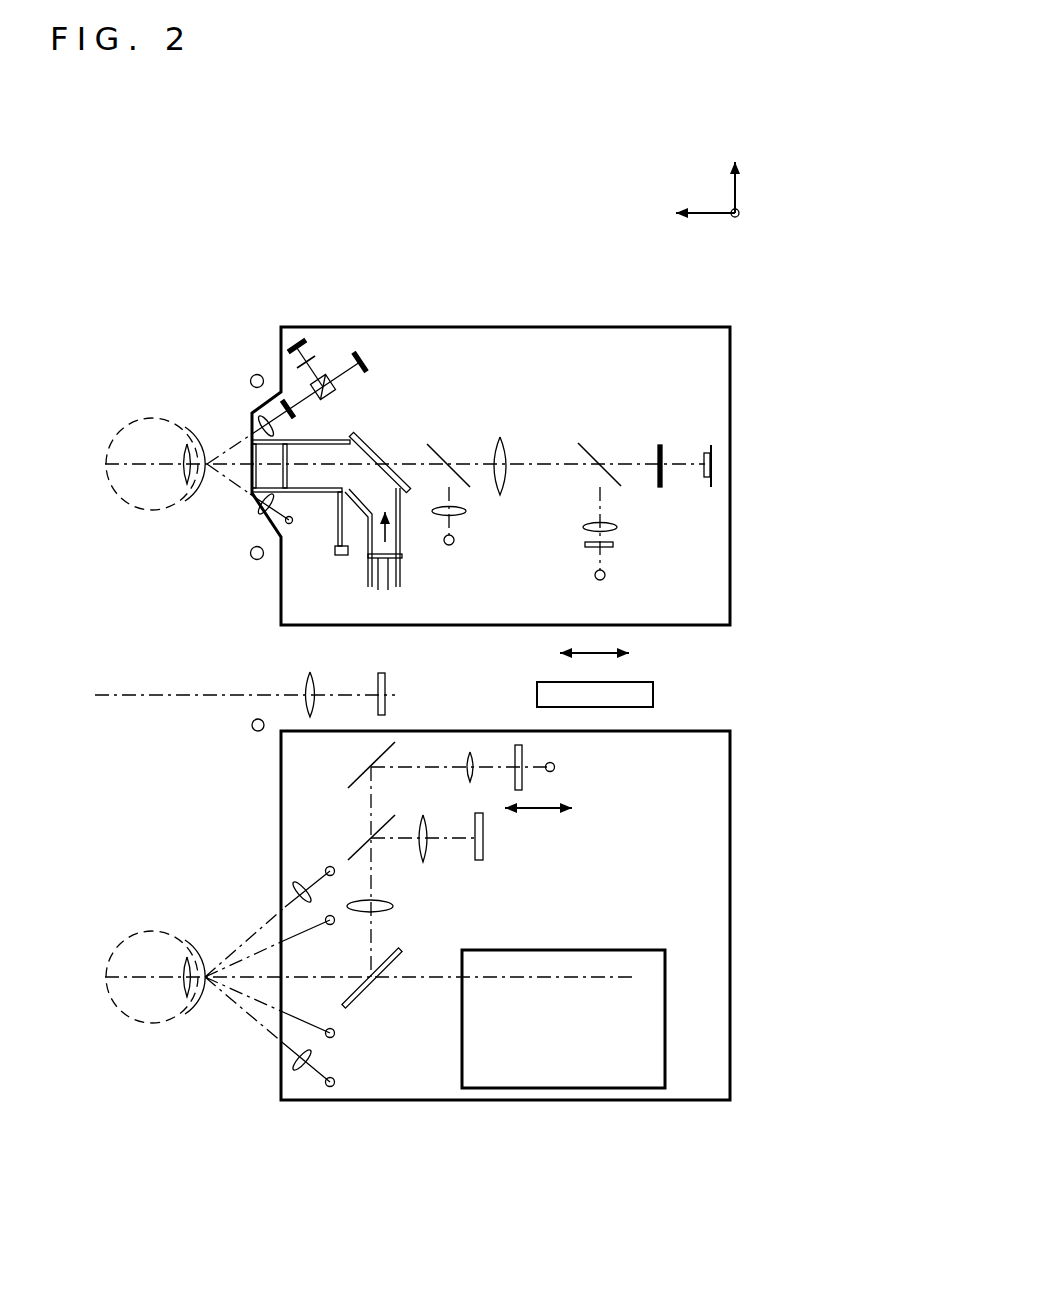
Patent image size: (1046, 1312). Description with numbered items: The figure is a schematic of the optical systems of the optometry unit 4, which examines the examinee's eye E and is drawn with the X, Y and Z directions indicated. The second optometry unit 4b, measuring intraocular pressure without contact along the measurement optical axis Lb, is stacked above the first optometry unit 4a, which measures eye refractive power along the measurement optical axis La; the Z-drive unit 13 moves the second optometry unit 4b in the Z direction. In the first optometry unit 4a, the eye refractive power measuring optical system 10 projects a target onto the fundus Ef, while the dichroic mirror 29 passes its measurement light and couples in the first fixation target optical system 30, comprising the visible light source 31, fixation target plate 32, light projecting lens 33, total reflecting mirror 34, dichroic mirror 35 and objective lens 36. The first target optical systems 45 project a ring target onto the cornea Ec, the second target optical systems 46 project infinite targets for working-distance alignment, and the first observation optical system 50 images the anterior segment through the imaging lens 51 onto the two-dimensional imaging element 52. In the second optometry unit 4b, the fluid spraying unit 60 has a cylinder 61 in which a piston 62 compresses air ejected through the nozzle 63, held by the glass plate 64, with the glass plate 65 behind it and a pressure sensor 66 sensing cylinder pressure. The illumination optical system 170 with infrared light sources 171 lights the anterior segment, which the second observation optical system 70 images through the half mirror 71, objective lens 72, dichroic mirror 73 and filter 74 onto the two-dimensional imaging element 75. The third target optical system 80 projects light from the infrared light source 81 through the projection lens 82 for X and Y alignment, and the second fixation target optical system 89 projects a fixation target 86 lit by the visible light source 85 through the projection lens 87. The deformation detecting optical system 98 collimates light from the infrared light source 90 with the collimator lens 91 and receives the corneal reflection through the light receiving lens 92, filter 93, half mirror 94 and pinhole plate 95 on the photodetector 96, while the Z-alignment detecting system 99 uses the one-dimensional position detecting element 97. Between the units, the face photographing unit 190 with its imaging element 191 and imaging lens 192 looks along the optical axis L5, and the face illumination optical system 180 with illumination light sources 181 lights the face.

The optometry unit 4 is at (802, 522).
The first optometry unit 4a is at (500, 1100).
The second optometry unit 4b is at (625, 325).
The eye refractive power measuring optical system 10 is at (625, 950).
The Z-drive unit 13 is at (653, 694).
The dichroic mirror 29 is at (368, 998).
The first fixation target optical system 30 is at (608, 826).
The visible light source 31 is at (556, 770).
The fixation target plate 32 is at (521, 748).
The light projecting lens 33 is at (466, 775).
The total reflecting mirror 34 is at (358, 778).
The dichroic mirror 35 is at (357, 848).
The objective lens 36 is at (393, 905).
The first target optical systems 45 is at (292, 947).
The second target optical systems 46 is at (297, 868).
The first observation optical system 50 is at (488, 882).
The imaging lens 51 is at (428, 850).
The two-dimensional imaging element 52 is at (483, 848).
The fluid spraying unit 60 is at (280, 607).
The cylinder 61 is at (372, 562).
The piston 62 is at (398, 560).
The nozzle 63 is at (272, 474).
The glass plate 64 is at (278, 446).
The glass plate 65 is at (380, 447).
The pressure sensor 66 is at (337, 552).
The second observation optical system 70 is at (634, 410).
The half mirror 71 is at (441, 438).
The objective lens 72 is at (503, 437).
The dichroic mirror 73 is at (592, 443).
The filter 74 is at (663, 447).
The two-dimensional imaging element 75 is at (710, 488).
The third target optical system 80 is at (490, 558).
The infrared light source 81 is at (449, 547).
The projection lens 82 is at (465, 512).
The visible light source 85 is at (603, 579).
The fixation target 86 is at (613, 545).
The projection lens 87 is at (614, 521).
The second fixation target optical system 89 is at (668, 553).
The infrared light source 90 is at (252, 528).
The collimator lens 91 is at (258, 505).
The light receiving lens 92 is at (258, 426).
The filter 93 is at (278, 402).
The half mirror 94 is at (336, 390).
The pinhole plate 95 is at (300, 360).
The photodetector 96 is at (296, 340).
The one-dimensional position detecting element 97 is at (372, 364).
The deformation detecting optical system 98 is at (258, 298).
The Z-alignment detecting system 99 is at (383, 320).
The illumination optical system 170 is at (165, 298).
The infrared light sources 171 is at (254, 376).
The face illumination optical system 180 is at (236, 732).
The illumination light sources 181 is at (258, 733).
The face photographing unit 190 is at (432, 690).
The imaging element 191 is at (385, 675).
The imaging lens 192 is at (318, 675).
The examinee's eye E is at (119, 432).
The cornea Ec is at (195, 497).
The fundus Ef is at (108, 1005).
The measurement optical axis La is at (528, 980).
The measurement optical axis Lb is at (548, 468).
The optical axis L5 is at (200, 690).
The X direction X is at (739, 218).
The Y direction Y is at (733, 161).
The Z direction Z is at (690, 216).